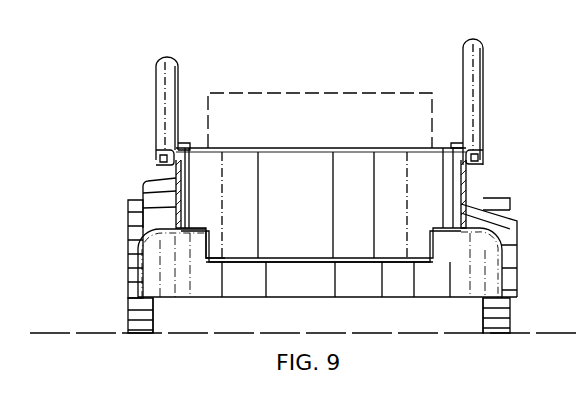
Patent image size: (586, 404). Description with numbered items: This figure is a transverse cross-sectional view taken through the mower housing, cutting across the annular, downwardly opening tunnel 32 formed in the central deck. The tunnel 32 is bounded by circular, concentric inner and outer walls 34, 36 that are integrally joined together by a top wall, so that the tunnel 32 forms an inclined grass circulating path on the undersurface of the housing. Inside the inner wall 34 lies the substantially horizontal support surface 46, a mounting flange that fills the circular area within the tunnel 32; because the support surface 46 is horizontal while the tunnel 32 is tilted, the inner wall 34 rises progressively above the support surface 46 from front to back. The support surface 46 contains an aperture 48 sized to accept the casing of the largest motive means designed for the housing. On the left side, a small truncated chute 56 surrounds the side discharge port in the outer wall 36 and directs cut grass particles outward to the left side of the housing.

The tunnel 32 is at (211, 252).
The inner wall 34 is at (203, 256).
The outer wall 36 is at (140, 272).
The support surface 46 is at (393, 260).
The aperture 48 is at (341, 246).
The chute 56 is at (512, 230).